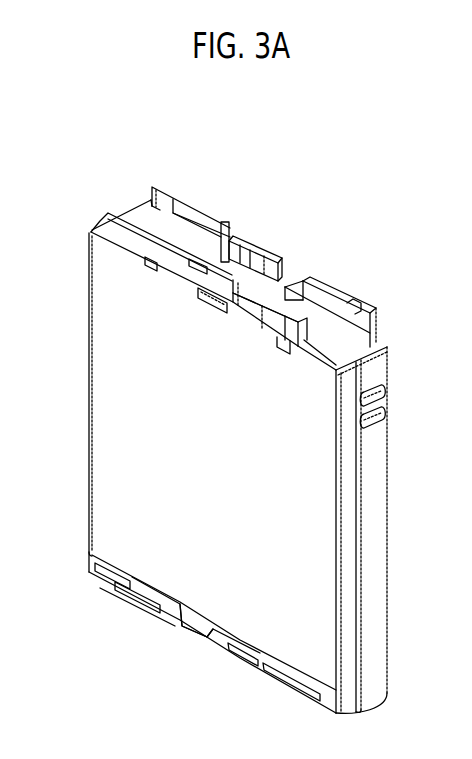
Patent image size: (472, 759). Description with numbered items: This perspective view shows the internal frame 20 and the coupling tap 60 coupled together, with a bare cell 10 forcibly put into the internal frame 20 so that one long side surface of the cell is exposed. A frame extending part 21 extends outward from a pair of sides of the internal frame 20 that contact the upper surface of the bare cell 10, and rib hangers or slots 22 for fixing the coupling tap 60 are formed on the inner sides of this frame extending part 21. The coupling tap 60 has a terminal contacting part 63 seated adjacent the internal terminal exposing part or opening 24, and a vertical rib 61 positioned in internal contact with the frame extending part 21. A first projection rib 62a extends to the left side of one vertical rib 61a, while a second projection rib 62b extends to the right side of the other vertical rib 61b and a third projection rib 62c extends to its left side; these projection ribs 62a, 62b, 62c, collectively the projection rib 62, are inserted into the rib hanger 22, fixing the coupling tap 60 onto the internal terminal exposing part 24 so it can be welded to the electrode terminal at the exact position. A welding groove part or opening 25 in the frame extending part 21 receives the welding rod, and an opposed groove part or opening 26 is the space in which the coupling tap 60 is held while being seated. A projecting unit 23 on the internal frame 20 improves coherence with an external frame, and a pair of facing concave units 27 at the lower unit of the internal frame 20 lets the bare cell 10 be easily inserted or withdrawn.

The bare cell 10 is at (120, 433).
The internal frame 20 is at (60, 205).
The frame extending part 21 is at (146, 193).
The rib hanger 22 is at (208, 213).
The projecting unit 23 is at (230, 262).
The internal terminal exposing part 24 is at (197, 300).
The welding groove part 25 is at (297, 285).
The groove part 26 is at (258, 308).
The concave unit 27 is at (205, 638).
The coupling tap 60 is at (272, 105).
The vertical rib 61 is at (356, 199).
The one vertical rib 61a is at (278, 263).
The other vertical rib 61b is at (292, 280).
The projection rib 62 is at (305, 135).
The first projection rib 62a is at (246, 247).
The second projection rib 62b is at (260, 255).
The third projection rib 62c is at (236, 242).
The terminal contacting part 63 is at (294, 282).